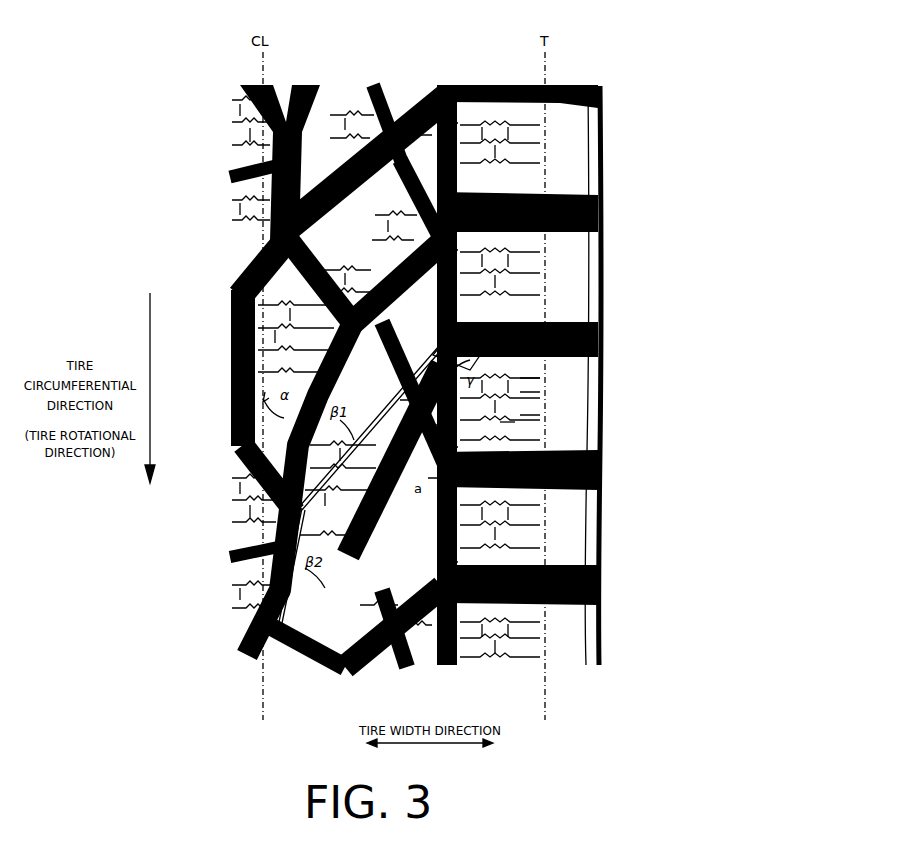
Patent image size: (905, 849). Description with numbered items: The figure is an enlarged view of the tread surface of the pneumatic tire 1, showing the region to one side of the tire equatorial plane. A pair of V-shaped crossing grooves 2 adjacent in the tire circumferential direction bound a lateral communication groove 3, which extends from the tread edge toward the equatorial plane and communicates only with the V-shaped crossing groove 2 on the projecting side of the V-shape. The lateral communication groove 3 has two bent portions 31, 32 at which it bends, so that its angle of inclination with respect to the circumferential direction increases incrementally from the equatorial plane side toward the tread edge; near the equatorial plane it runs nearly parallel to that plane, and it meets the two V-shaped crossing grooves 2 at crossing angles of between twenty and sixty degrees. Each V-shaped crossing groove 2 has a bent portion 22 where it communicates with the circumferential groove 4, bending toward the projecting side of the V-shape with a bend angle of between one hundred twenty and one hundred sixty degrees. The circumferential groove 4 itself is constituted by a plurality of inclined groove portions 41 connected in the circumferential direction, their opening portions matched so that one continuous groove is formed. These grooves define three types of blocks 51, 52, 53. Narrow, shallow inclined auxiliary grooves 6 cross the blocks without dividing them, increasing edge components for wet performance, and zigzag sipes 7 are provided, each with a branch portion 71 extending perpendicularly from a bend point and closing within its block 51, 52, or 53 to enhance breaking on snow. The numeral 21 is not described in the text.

The pneumatic tire 1 is at (585, 44).
The V-shaped crossing groove 2 is at (588, 92).
The lateral communication groove 3 is at (592, 208).
The circumferential groove 4 is at (458, 90).
The inclined auxiliary groove 6 is at (322, 242).
The sipe 7 is at (540, 378).
The first groove portion edge 21 is at (303, 507).
The bent portion 22 is at (452, 325).
The bent portion 31 is at (340, 336).
The bent portion 32 is at (456, 222).
The inclined groove portion 41 is at (452, 123).
The block 51 is at (374, 158).
The block 52 is at (335, 325).
The block 53 is at (575, 143).
The branch portion 71 is at (508, 421).